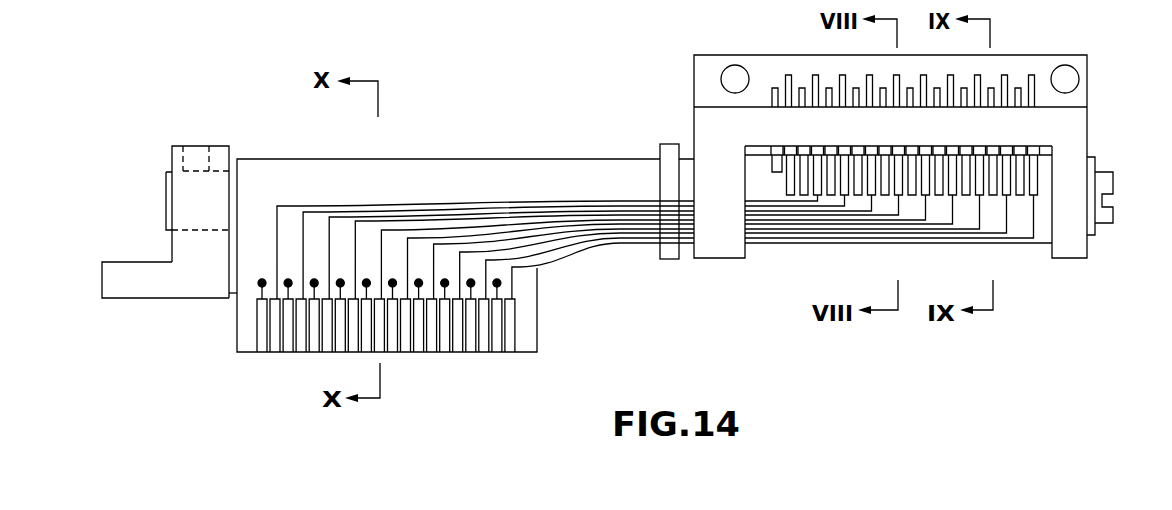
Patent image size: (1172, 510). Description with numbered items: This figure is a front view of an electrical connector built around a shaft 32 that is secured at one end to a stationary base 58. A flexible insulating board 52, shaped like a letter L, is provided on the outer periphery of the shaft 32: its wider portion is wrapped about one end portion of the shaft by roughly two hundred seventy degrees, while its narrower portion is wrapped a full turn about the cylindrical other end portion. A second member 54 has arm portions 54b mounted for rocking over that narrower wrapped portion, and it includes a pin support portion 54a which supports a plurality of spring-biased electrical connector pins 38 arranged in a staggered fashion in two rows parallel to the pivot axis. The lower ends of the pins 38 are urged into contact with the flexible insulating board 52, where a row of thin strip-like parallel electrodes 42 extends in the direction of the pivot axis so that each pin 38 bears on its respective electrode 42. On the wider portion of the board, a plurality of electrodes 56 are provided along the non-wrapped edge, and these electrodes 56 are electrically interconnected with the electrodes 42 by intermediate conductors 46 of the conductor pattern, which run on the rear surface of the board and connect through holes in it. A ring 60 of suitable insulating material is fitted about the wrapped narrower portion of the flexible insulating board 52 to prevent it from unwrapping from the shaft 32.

The shaft 32 is at (166, 185).
The spring-biased electrical connector pins 38 is at (787, 75).
The thin strip-like parallel electrodes 42 is at (1018, 198).
The intermediate conductors 46 is at (628, 242).
The flexible insulating board 52 is at (488, 167).
The second member 54 is at (1080, 142).
The pin support portion 54a is at (993, 115).
The arm portions 54b is at (723, 258).
The electrodes 56 is at (447, 352).
The stationary base 58 is at (190, 298).
The ring 60 is at (667, 144).